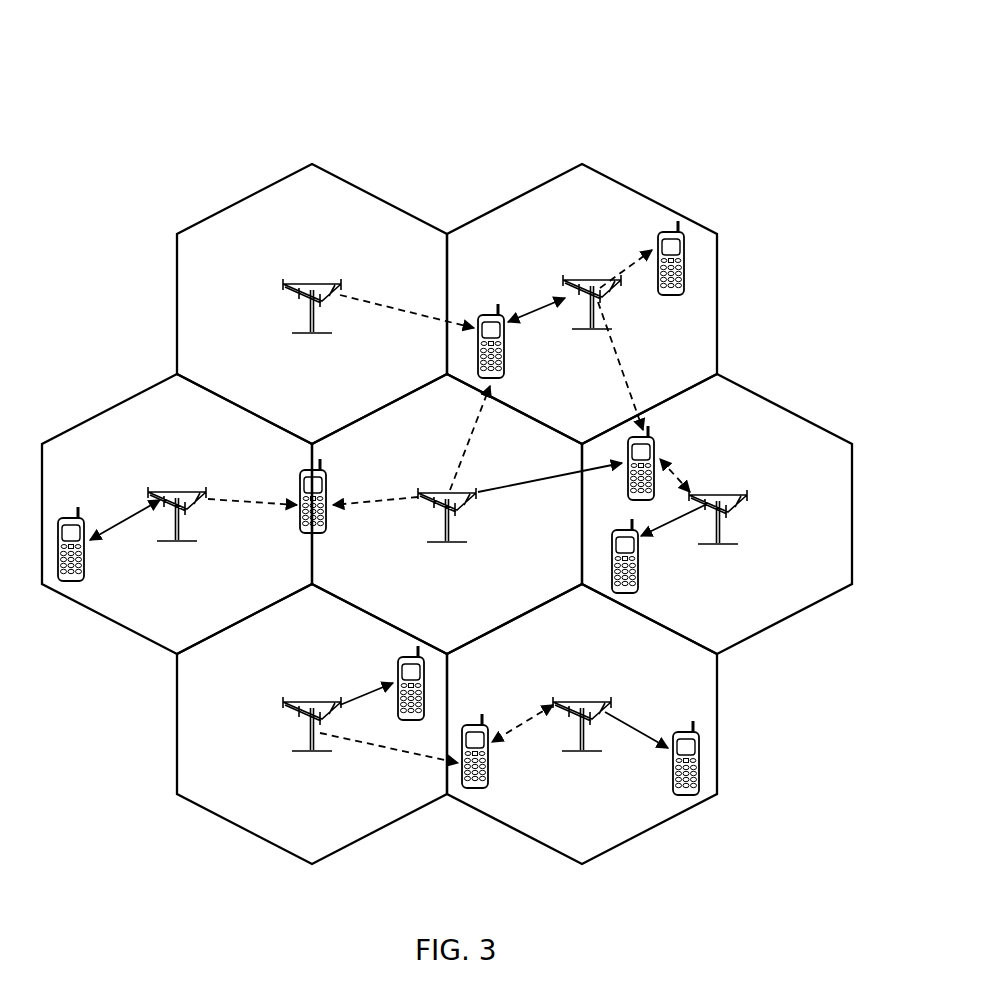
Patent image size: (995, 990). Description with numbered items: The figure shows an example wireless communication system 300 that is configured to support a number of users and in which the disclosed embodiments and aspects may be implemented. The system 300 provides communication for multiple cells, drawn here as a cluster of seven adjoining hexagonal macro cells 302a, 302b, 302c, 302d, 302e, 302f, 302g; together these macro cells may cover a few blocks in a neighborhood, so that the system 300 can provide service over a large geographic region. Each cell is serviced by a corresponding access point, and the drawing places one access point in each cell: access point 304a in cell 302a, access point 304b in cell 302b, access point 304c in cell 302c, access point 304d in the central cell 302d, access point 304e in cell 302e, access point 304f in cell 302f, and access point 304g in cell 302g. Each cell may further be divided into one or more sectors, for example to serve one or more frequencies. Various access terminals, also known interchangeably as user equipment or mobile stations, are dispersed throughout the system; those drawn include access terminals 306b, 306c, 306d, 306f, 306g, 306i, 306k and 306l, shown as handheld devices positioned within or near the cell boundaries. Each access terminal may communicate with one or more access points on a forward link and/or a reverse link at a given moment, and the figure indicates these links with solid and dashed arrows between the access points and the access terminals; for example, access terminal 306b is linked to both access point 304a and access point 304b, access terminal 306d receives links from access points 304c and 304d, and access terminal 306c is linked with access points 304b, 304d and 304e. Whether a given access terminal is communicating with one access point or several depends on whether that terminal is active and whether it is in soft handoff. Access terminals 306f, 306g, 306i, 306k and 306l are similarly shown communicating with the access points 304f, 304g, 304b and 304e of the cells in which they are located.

The wireless communication system 300 is at (628, 42).
The macro cell 302a is at (227, 208).
The macro cell 302b is at (667, 208).
The macro cell 302c is at (112, 405).
The macro cell 302d is at (444, 423).
The macro cell 302e is at (782, 405).
The macro cell 302f is at (210, 812).
The macro cell 302g is at (685, 812).
The access point 304a is at (314, 284).
The access point 304b is at (567, 280).
The access point 304c is at (178, 490).
The access point 304d is at (418, 490).
The access point 304e is at (745, 494).
The access point 304f is at (315, 700).
The access point 304g is at (584, 700).
The access terminal 306b is at (501, 313).
The access terminal 306c is at (88, 578).
The access terminal 306d is at (300, 532).
The access terminal 306f is at (395, 666).
The access terminal 306g is at (488, 778).
The access terminal 306i is at (659, 240).
The access terminal 306k is at (640, 578).
The access terminal 306l is at (690, 729).